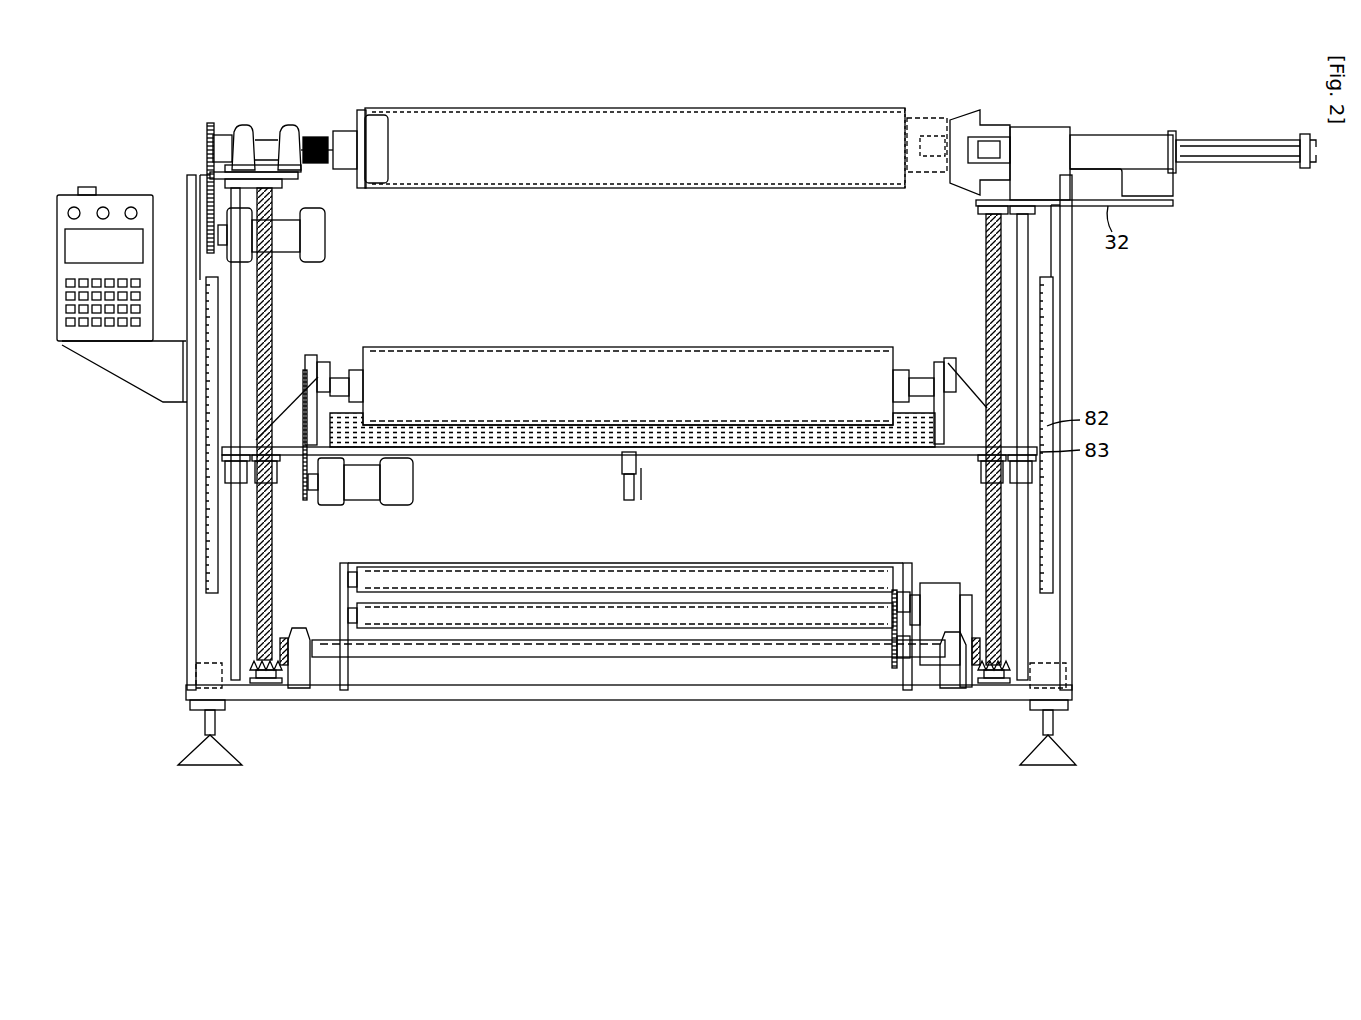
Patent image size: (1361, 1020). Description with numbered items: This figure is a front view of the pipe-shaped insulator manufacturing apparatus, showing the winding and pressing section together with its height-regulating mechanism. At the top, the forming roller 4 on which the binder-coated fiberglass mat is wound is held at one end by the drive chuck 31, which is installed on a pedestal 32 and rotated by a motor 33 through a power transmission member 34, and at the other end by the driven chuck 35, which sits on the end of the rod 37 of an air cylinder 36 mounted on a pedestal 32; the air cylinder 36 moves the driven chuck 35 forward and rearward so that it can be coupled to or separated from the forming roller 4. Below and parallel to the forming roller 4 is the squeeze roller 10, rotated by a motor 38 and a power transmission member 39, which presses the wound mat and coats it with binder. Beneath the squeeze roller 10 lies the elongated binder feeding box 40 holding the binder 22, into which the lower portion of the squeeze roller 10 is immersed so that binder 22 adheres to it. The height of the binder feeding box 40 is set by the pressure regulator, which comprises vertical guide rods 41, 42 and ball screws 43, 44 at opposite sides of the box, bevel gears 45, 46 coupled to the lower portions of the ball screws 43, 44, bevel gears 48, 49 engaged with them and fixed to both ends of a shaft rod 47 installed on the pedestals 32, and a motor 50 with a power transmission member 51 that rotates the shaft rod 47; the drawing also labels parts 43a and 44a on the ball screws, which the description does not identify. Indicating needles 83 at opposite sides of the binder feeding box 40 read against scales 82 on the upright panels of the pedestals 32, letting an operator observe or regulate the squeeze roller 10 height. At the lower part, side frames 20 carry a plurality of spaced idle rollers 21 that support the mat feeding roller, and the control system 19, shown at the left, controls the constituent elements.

The forming roller 4 is at (530, 118).
The squeeze roller 10 is at (628, 366).
The control system 19 is at (112, 196).
The side frames 20 is at (348, 690).
The idle rollers 21 is at (690, 615).
The binder 22 is at (730, 440).
The drive chuck 31 is at (366, 118).
The pedestal 32 is at (292, 178).
The motor 33 is at (320, 238).
The power transmission member 34 is at (207, 125).
The driven chuck 35 is at (955, 125).
The air cylinder 36 is at (1230, 144).
The rod 37 is at (1170, 134).
The motor 38 is at (412, 490).
The power transmission member 39 is at (303, 378).
The binder feeding box 40 is at (548, 456).
The vertical guide rod 41 is at (1030, 523).
The vertical guide rod 42 is at (236, 510).
The ball screw 43 is at (1000, 555).
The nut 43a is at (990, 470).
The ball screw 44 is at (258, 545).
The nut 44a is at (268, 484).
The bevel gear 45 is at (998, 683).
The bevel gear 46 is at (268, 685).
The shaft rod 47 is at (588, 660).
The bevel gear 48 is at (965, 665).
The bevel gear 49 is at (282, 640).
The motor 50 is at (938, 600).
The power transmission member 51 is at (890, 642).
The scales 82 is at (213, 475).
The indicating needles 83 is at (216, 447).